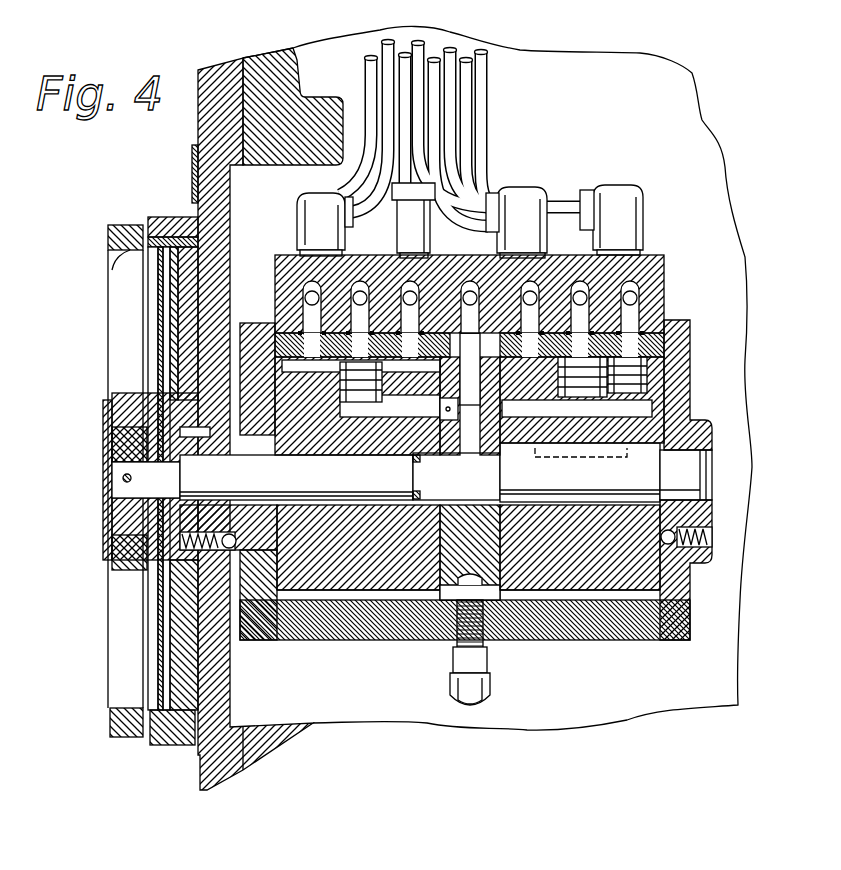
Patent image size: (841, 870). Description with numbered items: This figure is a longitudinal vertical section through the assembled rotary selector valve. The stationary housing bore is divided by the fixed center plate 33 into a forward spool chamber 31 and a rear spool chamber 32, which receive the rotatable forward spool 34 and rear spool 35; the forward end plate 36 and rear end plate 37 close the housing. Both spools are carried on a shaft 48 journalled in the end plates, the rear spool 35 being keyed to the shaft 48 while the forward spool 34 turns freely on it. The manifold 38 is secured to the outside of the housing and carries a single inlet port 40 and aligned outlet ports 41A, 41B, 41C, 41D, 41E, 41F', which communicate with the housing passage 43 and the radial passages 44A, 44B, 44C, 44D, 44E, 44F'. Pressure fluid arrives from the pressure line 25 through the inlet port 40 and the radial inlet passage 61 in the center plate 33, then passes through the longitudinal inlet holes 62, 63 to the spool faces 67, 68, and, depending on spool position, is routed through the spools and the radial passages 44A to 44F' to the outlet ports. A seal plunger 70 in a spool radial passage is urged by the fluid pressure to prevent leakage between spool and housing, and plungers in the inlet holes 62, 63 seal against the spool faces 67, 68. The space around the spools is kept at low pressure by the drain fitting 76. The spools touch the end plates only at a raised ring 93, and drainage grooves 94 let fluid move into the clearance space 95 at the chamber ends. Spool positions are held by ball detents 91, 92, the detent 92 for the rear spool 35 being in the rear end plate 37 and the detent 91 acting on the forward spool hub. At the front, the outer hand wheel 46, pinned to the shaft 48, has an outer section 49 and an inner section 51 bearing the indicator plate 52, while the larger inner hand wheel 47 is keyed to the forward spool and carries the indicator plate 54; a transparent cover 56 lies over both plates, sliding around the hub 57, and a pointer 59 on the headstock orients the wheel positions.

The pressure line 25 is at (440, 55).
The forward spool chamber 31 is at (327, 367).
The rear spool chamber 32 is at (655, 362).
The center plate 33 is at (487, 633).
The forward spool 34 is at (377, 600).
The rear spool 35 is at (663, 432).
The forward end plate 36 is at (253, 643).
The rear end plate 37 is at (688, 632).
The manifold 38 is at (665, 256).
The inlet port 40 is at (492, 265).
The outlet port 41A is at (307, 317).
The outlet port 41B is at (357, 347).
The outlet port 41C is at (400, 297).
The outlet port 41D is at (534, 346).
The outlet port 41E is at (585, 313).
The outlet port 41F' is at (681, 285).
The housing passage 43 is at (470, 369).
The radial passage 44A is at (307, 350).
The radial passage 44B is at (328, 335).
The radial passage 44C is at (412, 353).
The radial passage 44D is at (557, 348).
The radial passage 44E is at (583, 348).
The radial passage 44F' is at (676, 356).
The outer hand wheel 46 is at (106, 230).
The inner hand wheel 47 is at (150, 215).
The shaft 48 is at (575, 479).
The outer section 49 is at (111, 262).
The inner section 51 is at (128, 516).
The indicator plate 52 is at (160, 325).
The indicator plate 54 is at (165, 275).
The transparent cover 56 is at (168, 300).
The hub 57 is at (125, 441).
The pointer 59 is at (192, 160).
The radial inlet passage 61 is at (460, 409).
The inlet hole 62 is at (462, 420).
The inlet hole 63 is at (473, 417).
The spool face 67 is at (472, 350).
The spool face 68 is at (497, 373).
The seal plunger 70 is at (650, 378).
The drain fitting 76 is at (462, 685).
The ball detent 91 is at (229, 534).
The ball detent 92 is at (690, 570).
The raised ring 93 is at (642, 577).
The drainage groove 94 is at (677, 592).
The clearance space 95 is at (710, 512).